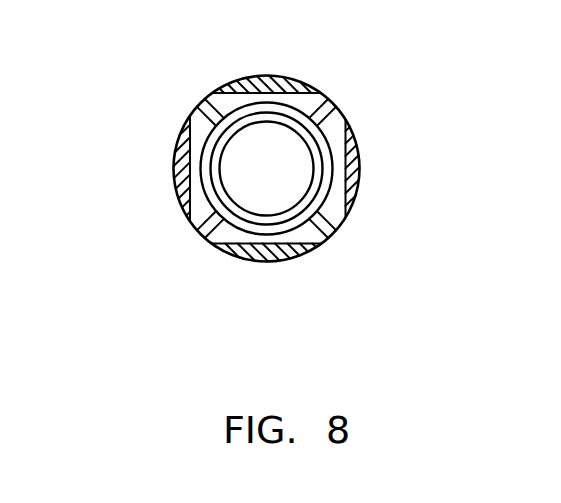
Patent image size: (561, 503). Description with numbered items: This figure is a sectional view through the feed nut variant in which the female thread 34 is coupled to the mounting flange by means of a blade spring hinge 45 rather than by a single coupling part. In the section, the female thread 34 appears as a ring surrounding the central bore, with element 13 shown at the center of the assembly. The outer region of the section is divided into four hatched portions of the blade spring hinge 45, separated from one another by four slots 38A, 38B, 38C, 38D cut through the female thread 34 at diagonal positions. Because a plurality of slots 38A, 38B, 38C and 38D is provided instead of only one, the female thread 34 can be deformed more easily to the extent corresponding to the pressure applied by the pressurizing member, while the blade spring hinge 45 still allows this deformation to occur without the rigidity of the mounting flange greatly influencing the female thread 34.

The tube 13 is at (282, 163).
The female thread 34 is at (295, 110).
The blade spring hinge 45 is at (233, 86).
The slot 38A is at (330, 98).
The slot 38B is at (333, 243).
The slot 38C is at (197, 240).
The slot 38D is at (197, 100).